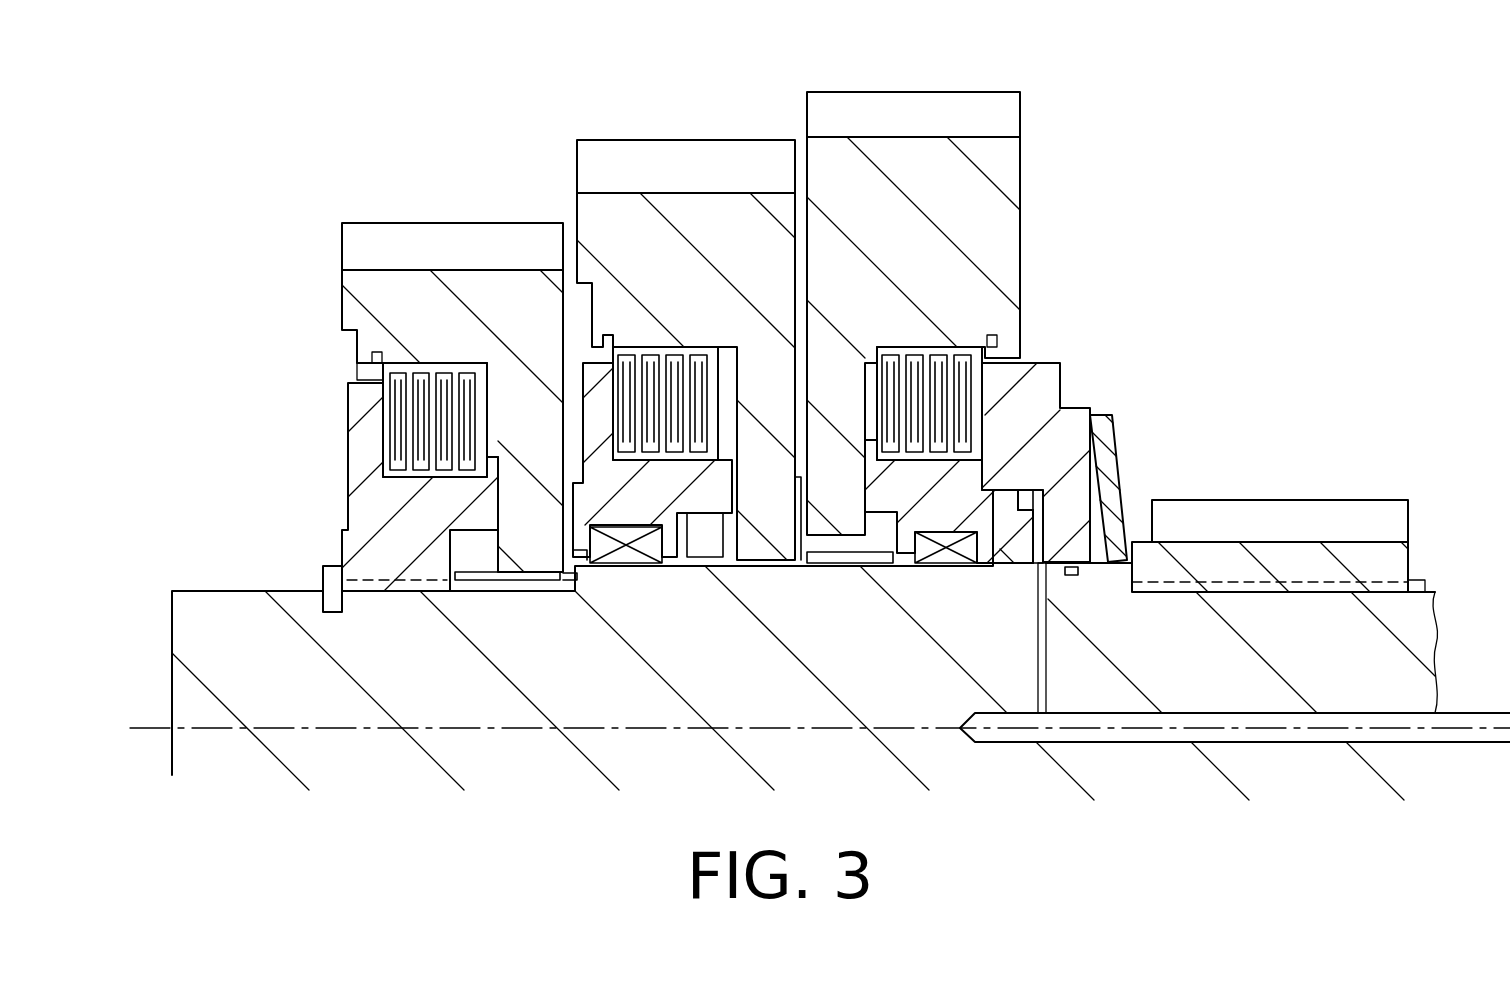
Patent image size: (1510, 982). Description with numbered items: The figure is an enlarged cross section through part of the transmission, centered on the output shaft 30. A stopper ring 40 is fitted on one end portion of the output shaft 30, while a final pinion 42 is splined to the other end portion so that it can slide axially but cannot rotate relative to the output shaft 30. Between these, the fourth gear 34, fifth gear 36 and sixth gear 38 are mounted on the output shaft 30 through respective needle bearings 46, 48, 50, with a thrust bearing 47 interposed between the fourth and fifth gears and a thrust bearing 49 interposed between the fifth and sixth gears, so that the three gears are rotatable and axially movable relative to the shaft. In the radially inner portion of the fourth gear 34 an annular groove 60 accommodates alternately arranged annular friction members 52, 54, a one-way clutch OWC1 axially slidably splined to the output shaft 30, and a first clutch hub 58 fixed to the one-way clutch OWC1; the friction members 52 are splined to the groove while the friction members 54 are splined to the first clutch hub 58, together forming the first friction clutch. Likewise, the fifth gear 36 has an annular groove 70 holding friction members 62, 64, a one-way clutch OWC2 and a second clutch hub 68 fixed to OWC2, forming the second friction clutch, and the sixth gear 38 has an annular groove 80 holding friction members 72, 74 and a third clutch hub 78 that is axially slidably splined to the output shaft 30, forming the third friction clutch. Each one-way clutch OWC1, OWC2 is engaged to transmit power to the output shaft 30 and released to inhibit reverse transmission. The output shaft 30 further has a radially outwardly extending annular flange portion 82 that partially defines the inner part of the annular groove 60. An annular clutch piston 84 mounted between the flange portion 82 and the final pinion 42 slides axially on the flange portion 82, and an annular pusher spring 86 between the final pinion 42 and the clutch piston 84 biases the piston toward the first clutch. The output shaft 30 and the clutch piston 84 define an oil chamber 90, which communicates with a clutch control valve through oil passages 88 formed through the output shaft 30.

The output shaft 30 is at (208, 603).
The fourth gear 34 is at (850, 92).
The fifth gear 36 is at (613, 145).
The sixth gear 38 is at (372, 222).
The stopper ring 40 is at (323, 585).
The final pinion 42 is at (1330, 512).
The needle bearing 46 is at (837, 567).
The thrust bearing 47 is at (790, 560).
The needle bearing 48 is at (743, 567).
The thrust bearing 49 is at (567, 580).
The needle bearing 50 is at (508, 575).
The annular friction members 52 is at (1003, 345).
The annular friction members 54 is at (966, 352).
The first clutch hub 58 is at (907, 567).
The annular groove 60 is at (889, 352).
The annular friction members 62 is at (695, 362).
The annular friction members 64 is at (740, 352).
The second clutch hub 68 is at (673, 567).
The annular groove 70 is at (652, 365).
The annular friction members 72 is at (465, 378).
The annular friction members 74 is at (499, 392).
The third clutch hub 78 is at (363, 508).
The annular groove 80 is at (421, 378).
The annular flange portion 82 is at (1043, 512).
The clutch piston 84 is at (1062, 378).
The pusher spring 86 is at (1116, 435).
The oil passages 88 is at (1037, 652).
The oil chamber 90 is at (1052, 568).
The one-way clutch OWC1 is at (945, 565).
The one-way clutch OWC2 is at (614, 565).